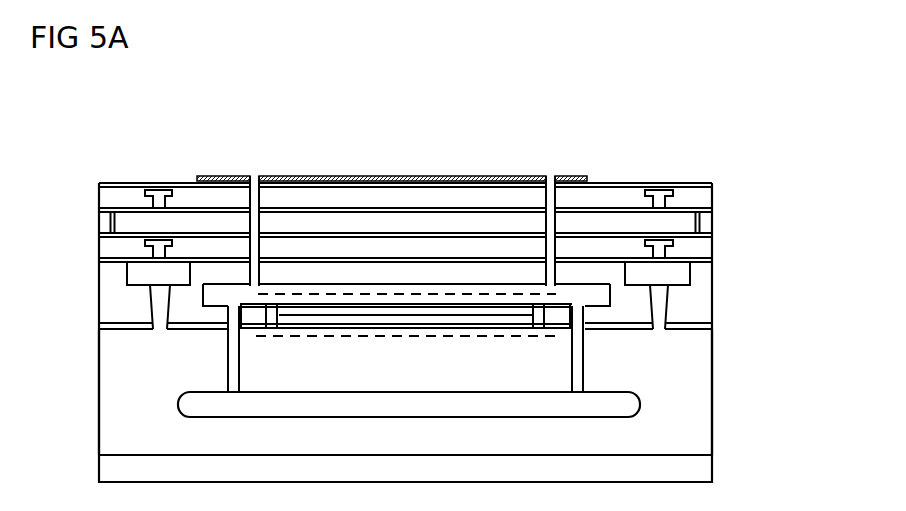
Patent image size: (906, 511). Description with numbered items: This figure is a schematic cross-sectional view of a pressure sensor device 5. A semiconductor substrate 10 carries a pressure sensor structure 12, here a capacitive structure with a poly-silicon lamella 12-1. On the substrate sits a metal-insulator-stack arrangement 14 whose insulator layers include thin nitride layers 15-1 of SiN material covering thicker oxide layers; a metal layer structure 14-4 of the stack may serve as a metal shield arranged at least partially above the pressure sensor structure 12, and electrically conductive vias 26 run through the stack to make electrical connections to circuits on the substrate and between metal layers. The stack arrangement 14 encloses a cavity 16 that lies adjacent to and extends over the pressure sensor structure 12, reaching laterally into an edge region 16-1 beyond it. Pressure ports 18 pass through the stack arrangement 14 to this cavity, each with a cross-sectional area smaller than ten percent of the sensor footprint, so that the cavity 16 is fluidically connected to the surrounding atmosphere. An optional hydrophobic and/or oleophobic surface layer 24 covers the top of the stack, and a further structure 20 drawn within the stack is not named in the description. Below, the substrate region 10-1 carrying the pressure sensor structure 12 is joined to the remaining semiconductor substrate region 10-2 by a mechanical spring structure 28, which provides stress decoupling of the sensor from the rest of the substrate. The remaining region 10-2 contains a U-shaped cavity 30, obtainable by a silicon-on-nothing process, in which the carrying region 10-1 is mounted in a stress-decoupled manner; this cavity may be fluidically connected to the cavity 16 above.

The pressure sensor device 5 is at (667, 106).
The semiconductor substrate 10 is at (713, 397).
The region of the semiconductor substrate carrying the pressure sensor structure 10-1 is at (553, 393).
The remaining semiconductor substrate region 10-2 is at (690, 468).
The pressure sensor structure 12 is at (360, 349).
The poly-silicon lamella 12-1 is at (473, 328).
The metal-insulator-stack arrangement 14 is at (776, 185).
The metal layer structure 14-4 is at (700, 222).
The nitride layer 15-1 is at (98, 209).
The cavity 16 is at (406, 295).
The edge region of the cavity 16-1 is at (250, 316).
The pressure port 18 is at (256, 165).
The interlayer body 20 is at (440, 198).
The hydrophobic and/or oleophobic surface layer 24 is at (192, 170).
The electrically conductive via 26 is at (658, 190).
The mechanical spring structure 28 is at (227, 346).
The U-shaped cavity 30 is at (405, 405).